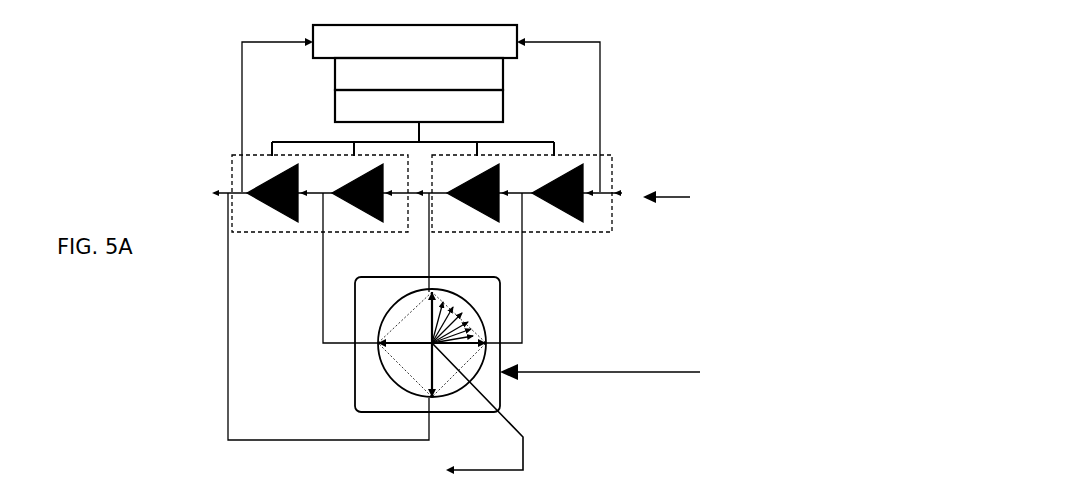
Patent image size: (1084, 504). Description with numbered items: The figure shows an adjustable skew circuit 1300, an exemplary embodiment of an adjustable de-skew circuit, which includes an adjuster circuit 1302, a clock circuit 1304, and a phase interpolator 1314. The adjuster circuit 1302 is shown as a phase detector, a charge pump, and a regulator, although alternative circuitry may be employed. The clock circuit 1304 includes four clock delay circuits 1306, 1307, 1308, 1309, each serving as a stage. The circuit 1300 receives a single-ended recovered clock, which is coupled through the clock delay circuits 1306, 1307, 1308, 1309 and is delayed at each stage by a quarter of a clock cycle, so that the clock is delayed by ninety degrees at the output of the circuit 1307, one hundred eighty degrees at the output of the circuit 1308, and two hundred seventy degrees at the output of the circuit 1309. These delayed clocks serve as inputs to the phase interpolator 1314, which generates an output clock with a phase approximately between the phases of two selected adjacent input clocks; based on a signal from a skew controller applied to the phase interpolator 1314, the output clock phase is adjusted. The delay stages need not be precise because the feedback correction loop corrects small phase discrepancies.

The adjustable skew circuit 1300 is at (635, 37).
The adjuster circuit 1302 is at (517, 83).
The clock circuit 1304 is at (428, 190).
The clock delay circuit 1306 is at (552, 198).
The clock delay circuit 1307 is at (468, 198).
The clock delay circuit 1308 is at (352, 198).
The clock delay circuit 1309 is at (267, 198).
The phase interpolator 1314 is at (352, 385).